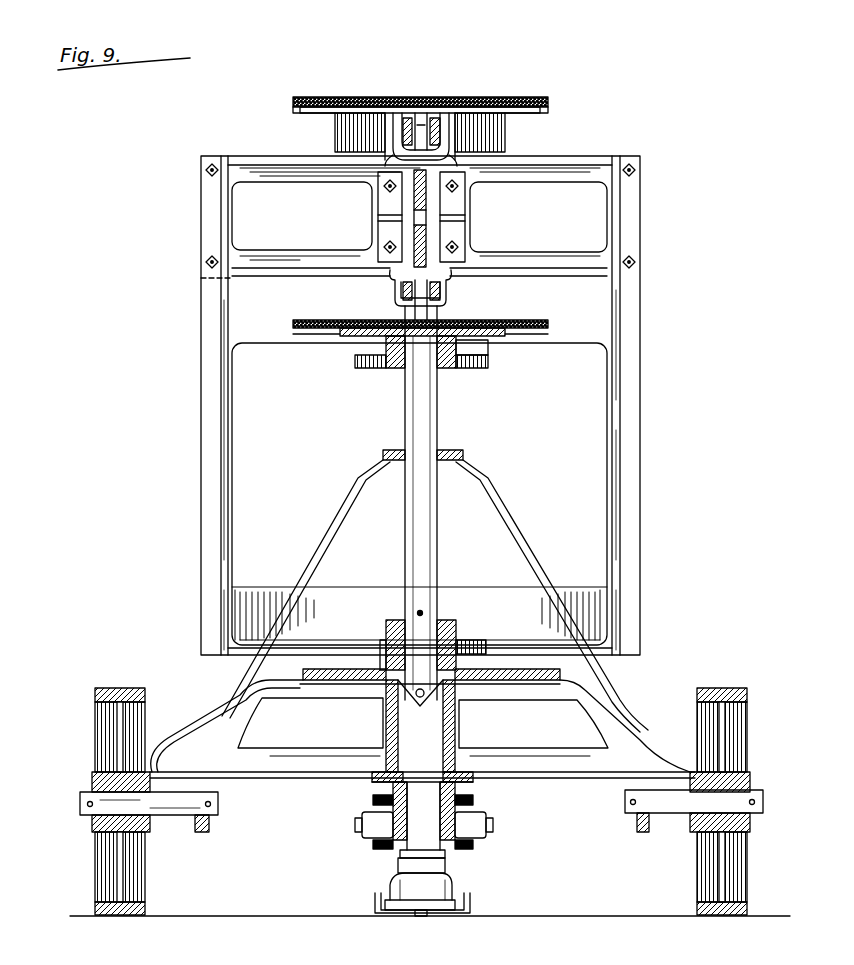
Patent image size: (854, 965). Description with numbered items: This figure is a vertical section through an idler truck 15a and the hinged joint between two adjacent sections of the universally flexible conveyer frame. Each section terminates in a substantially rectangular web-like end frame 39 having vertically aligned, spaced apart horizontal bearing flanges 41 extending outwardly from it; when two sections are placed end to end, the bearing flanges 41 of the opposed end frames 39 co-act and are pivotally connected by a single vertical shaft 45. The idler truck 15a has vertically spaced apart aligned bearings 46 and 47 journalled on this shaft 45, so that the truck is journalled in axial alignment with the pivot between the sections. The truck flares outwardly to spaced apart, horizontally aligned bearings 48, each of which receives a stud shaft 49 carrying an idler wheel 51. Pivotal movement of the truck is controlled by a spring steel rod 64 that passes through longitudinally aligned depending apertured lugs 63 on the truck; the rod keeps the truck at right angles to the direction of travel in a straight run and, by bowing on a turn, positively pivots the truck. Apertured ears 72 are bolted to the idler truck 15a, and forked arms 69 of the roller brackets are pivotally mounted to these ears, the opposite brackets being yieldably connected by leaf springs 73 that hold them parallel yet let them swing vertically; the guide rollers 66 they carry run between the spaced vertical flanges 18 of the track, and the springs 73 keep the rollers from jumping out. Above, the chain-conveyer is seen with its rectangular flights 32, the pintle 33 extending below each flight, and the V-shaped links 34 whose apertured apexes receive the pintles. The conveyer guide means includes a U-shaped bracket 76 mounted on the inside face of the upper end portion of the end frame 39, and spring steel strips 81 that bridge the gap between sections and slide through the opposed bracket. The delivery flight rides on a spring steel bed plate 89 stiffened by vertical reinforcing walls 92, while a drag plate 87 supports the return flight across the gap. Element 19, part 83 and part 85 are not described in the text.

The idler truck 15a is at (218, 700).
The vertical flanges 18 is at (374, 900).
The panel 19 is at (452, 236).
The flights 32 is at (500, 98).
The pintle 33 is at (438, 110).
The links 34 is at (412, 110).
The end frame 39 is at (634, 400).
The bearing flanges 41 is at (400, 370).
The vertical shaft 45 is at (432, 430).
The bearing 46 is at (392, 458).
The bearing 47 is at (384, 672).
The bearings 48 is at (202, 832).
The stud shaft 49 is at (218, 814).
The idler wheel 51 is at (96, 870).
The depending apertured lugs 63 is at (398, 700).
The spring steel rod 64 is at (445, 700).
The guide rollers 66 is at (455, 896).
The forked arms 69 is at (360, 832).
The apertured ears 72 is at (372, 800).
The leaf springs 73 is at (390, 846).
The U-shaped brackets 76 is at (592, 153).
The spring steel strips 81 is at (412, 225).
The bar 83 is at (410, 188).
The bracket 85 is at (401, 140).
The drag plate 87 is at (486, 347).
The bed plate 89 is at (310, 112).
The vertical reinforcing walls 92 is at (336, 133).